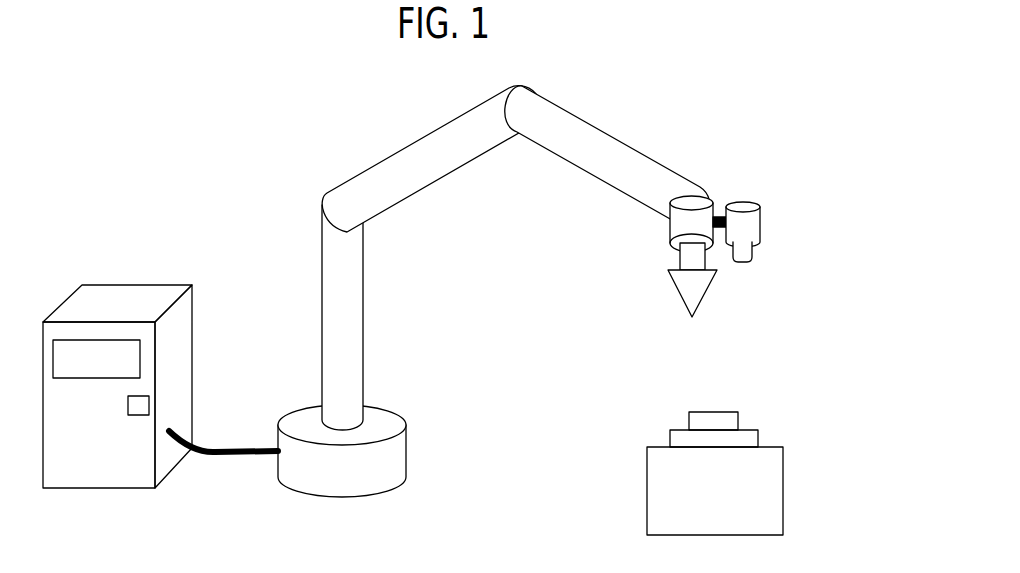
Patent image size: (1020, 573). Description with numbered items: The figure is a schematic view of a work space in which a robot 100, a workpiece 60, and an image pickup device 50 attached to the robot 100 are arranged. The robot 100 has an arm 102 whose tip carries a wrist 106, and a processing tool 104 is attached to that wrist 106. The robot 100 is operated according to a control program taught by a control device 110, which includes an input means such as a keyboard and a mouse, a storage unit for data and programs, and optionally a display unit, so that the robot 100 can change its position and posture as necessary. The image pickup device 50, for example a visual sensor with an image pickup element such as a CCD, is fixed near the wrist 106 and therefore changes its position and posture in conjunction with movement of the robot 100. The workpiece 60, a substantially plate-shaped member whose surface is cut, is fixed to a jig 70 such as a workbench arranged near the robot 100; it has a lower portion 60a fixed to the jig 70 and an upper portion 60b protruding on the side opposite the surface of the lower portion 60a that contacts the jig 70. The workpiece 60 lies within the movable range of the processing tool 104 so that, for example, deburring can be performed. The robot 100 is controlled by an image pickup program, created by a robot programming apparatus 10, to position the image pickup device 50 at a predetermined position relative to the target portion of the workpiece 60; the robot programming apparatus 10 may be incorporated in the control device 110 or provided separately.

The robot programming apparatus 10 is at (160, 321).
The control device 110 is at (108, 290).
The robot 100 is at (497, 272).
The arm 102 is at (627, 163).
The processing tool 104 is at (680, 293).
The wrist 106 is at (678, 225).
The image pickup device 50 is at (762, 230).
The workpiece 60 is at (781, 360).
The lower portion 60a is at (758, 438).
The upper portion 60b is at (720, 412).
The jig 70 is at (783, 465).